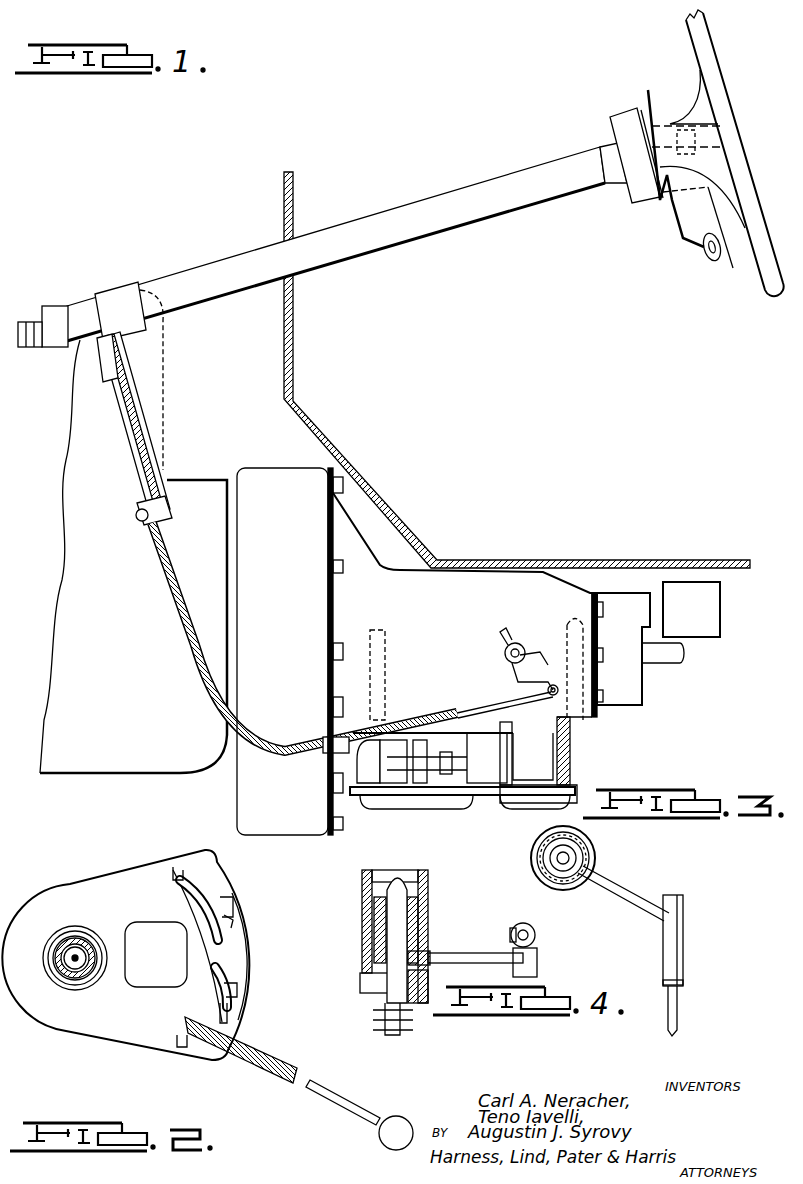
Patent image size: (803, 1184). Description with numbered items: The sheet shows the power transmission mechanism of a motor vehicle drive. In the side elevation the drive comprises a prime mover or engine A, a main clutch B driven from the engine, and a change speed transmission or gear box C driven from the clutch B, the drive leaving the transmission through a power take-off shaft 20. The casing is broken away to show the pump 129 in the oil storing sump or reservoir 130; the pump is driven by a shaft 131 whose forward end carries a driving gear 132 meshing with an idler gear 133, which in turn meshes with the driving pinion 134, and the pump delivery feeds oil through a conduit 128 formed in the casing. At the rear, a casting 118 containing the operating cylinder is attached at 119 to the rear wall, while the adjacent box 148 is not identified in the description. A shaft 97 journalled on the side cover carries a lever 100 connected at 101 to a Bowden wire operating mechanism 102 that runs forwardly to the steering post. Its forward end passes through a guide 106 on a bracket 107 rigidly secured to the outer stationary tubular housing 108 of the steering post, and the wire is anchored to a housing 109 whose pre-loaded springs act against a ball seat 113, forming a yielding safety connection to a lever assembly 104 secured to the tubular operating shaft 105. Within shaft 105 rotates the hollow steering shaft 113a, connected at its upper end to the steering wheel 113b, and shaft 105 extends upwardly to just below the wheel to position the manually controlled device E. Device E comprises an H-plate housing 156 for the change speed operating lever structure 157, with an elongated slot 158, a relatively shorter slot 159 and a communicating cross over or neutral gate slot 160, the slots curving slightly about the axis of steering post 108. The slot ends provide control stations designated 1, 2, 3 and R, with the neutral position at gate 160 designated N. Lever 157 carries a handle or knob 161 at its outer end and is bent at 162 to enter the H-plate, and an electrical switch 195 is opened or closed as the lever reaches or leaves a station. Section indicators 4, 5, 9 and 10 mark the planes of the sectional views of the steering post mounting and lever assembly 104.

In FIG. 1, the outer stationary tubular housing 108 is at (201, 272).
In FIG. 4, the outer stationary tubular housing 108 is at (362, 880).
In FIG. 3, the outer stationary tubular housing 108 is at (590, 845).
In FIG. 1, the steering wheel 113b is at (712, 74).
In FIG. 1, the manually controlled device E is at (622, 128).
In FIG. 2, the manually controlled device E is at (97, 890).
In FIG. 1, the change speed operating lever structure 157 is at (680, 240).
In FIG. 2, the change speed operating lever structure 157 is at (265, 1062).
In FIG. 1, the handle or knob 161 is at (706, 252).
In FIG. 1, the control station 2 is at (661, 67).
In FIG. 2, the control station 2 is at (229, 903).
In FIG. 1, the section line 5- 5 is at (660, 94).
In FIG. 1, the control station 3 is at (105, 237).
In FIG. 2, the control station 3 is at (238, 990).
In FIG. 1, the ball seat 113 is at (38, 321).
In FIG. 1, the bracket 107 is at (147, 428).
In FIG. 1, the housing 109 is at (102, 358).
In FIG. 4, the housing 109 is at (528, 925).
In FIG. 3, the housing 109 is at (684, 911).
In FIG. 1, the prime mover or engine A is at (92, 508).
In FIG. 1, the guide 106 is at (138, 523).
In FIG. 1, the driving gear 132 is at (385, 735).
In FIG. 1, the main clutch B is at (302, 482).
In FIG. 1, the change speed transmission or gear box C is at (486, 590).
In FIG. 1, the casting 118 is at (625, 592).
In FIG. 1, the control box 148 is at (692, 592).
In FIG. 1, the attachment point 119 is at (603, 657).
In FIG. 1, the power take-off shaft 20 is at (657, 664).
In FIG. 1, the section line 10- 10 is at (735, 630).
In FIG. 1, the driving pinion 134 is at (386, 640).
In FIG. 1, the idler gear 133 is at (396, 690).
In FIG. 1, the shaft 97 is at (518, 645).
In FIG. 1, the lever 100 is at (518, 683).
In FIG. 1, the Bowden wire operating mechanism 102 is at (462, 711).
In FIG. 3, the Bowden wire operating mechanism 102 is at (667, 1023).
In FIG. 1, the connection point 101 is at (550, 697).
In FIG. 1, the conduit 128 is at (572, 733).
In FIG. 1, the pump 129 is at (512, 760).
In FIG. 1, the oil storing sump or reservoir 130 is at (412, 807).
In FIG. 1, the shaft 131 is at (446, 760).
In FIG. 2, the H-plate housing 156 is at (117, 1025).
In FIG. 2, the electrical switch 195 is at (150, 940).
In FIG. 2, the elongated slot 158 is at (205, 882).
In FIG. 2, the relatively shorter slot 159 is at (234, 920).
In FIG. 2, the neutral position N is at (240, 942).
In FIG. 2, the cross over or neutral gate slot 160 is at (238, 962).
In FIG. 2, the bend of lever 162 is at (186, 1016).
In FIG. 2, the control station 1 is at (177, 1040).
In FIG. 2, the reverse station R is at (180, 881).
In FIG. 4, the tubular operating shaft 105 is at (374, 933).
In FIG. 3, the tubular operating shaft 105 is at (588, 858).
In FIG. 4, the hollow steering shaft 113a is at (392, 885).
In FIG. 4, the lever assembly 104 is at (463, 953).
In FIG. 3, the lever assembly 104 is at (617, 888).
In FIG. 3, the section line 4- 4 is at (520, 883).
In FIG. 3, the section line 9- 9 is at (654, 874).